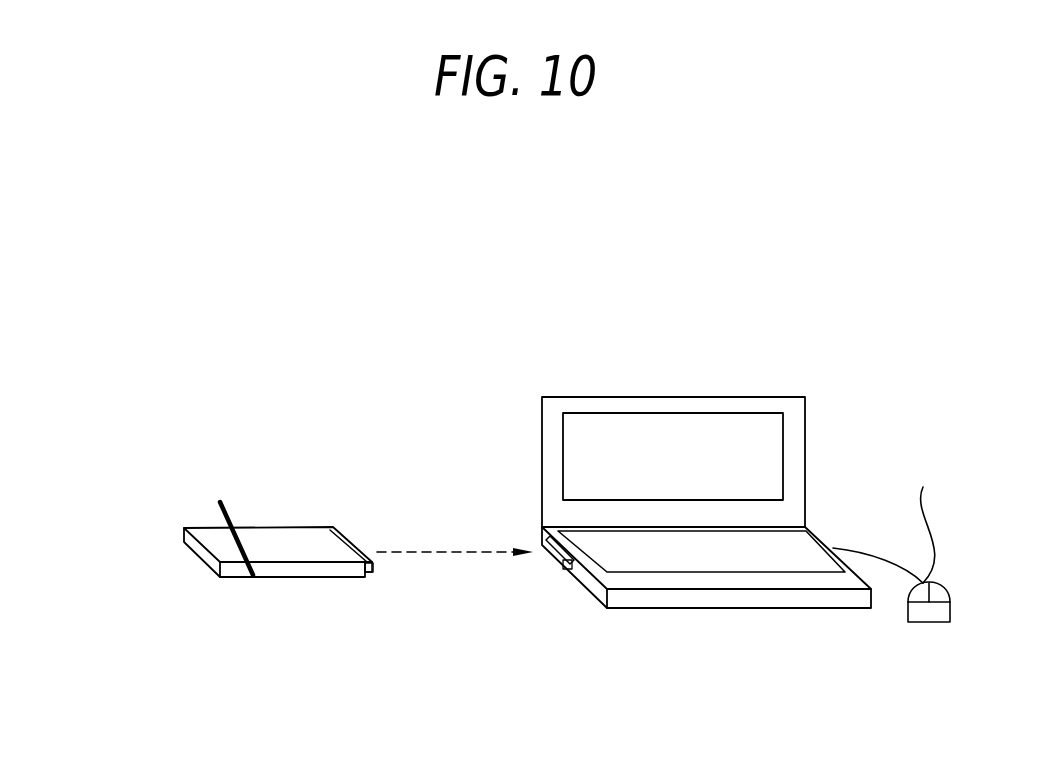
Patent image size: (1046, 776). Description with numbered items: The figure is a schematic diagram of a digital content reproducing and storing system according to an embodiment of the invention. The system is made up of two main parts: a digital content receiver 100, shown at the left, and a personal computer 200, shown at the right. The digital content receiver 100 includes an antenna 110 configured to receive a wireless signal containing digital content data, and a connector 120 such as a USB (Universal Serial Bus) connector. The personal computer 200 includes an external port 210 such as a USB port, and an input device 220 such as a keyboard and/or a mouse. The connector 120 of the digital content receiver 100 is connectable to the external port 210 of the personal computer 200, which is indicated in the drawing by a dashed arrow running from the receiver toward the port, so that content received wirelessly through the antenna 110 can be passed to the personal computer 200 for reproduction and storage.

The digital content receiver 100 is at (188, 448).
The antenna 110 is at (220, 517).
The connector 120 is at (347, 537).
The personal computer 200 is at (548, 380).
The external port 210 is at (560, 567).
The input device 220 is at (791, 542).